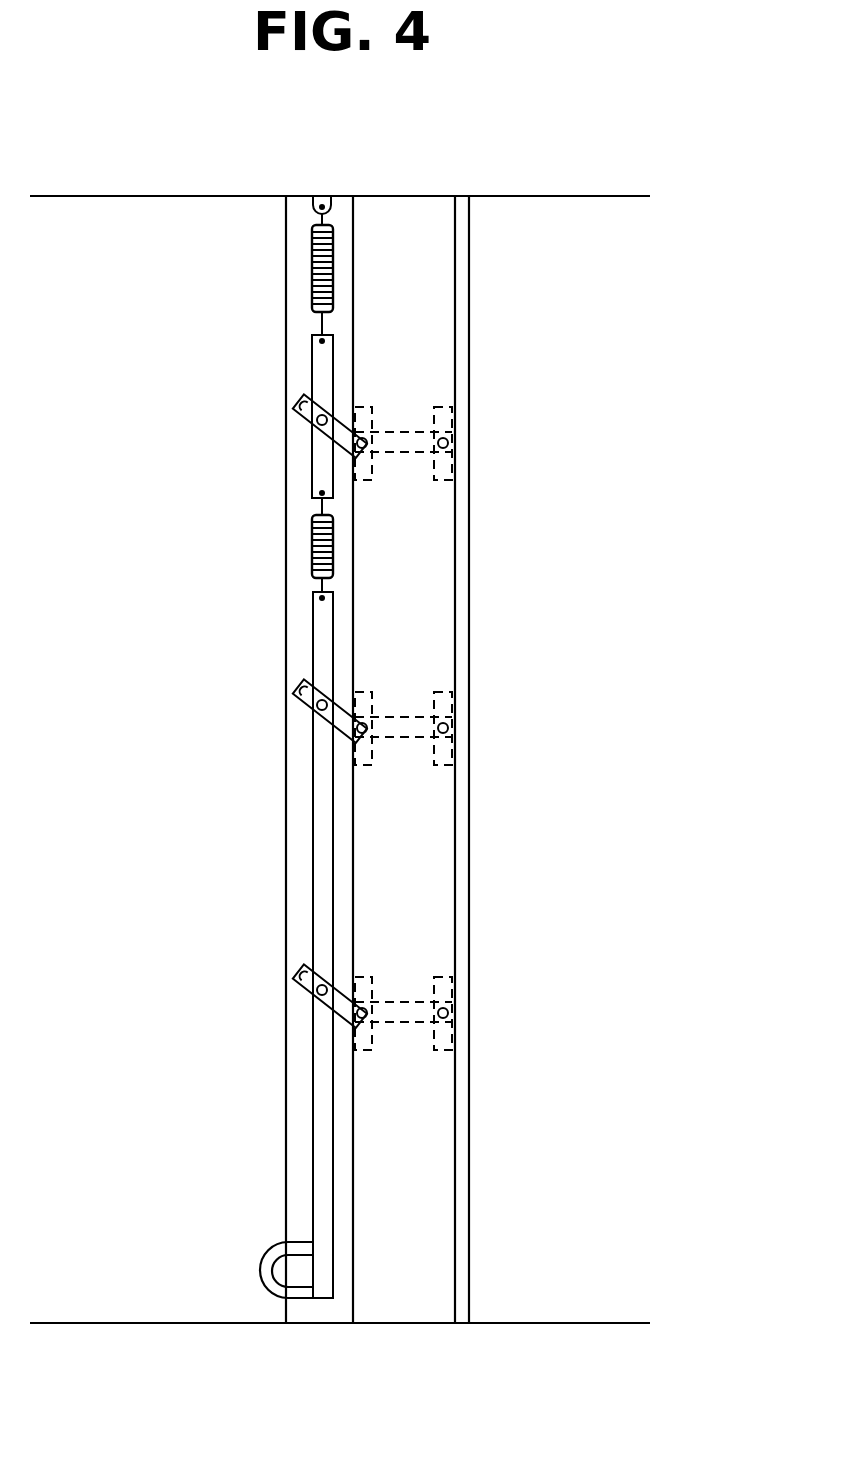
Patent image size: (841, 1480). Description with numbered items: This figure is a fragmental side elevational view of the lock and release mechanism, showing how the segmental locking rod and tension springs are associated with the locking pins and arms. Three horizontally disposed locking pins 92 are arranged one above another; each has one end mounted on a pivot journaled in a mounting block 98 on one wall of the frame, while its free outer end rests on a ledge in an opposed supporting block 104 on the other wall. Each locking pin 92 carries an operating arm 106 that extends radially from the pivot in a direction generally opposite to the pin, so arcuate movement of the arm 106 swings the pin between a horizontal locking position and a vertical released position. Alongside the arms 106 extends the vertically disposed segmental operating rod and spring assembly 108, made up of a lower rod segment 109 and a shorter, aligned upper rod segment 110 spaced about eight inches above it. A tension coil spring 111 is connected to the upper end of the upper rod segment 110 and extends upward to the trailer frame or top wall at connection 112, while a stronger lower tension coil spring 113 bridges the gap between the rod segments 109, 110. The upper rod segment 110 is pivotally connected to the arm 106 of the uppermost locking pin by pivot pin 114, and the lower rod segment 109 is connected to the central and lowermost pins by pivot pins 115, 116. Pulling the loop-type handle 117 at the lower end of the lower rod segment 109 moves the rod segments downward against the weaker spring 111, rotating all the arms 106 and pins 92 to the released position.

The locking pin 92 is at (398, 450).
The mounting block 98 is at (358, 1043).
The supporting block 104 is at (452, 983).
The operating arm 106 is at (303, 412).
The segmental operating rod and spring assembly 108 is at (300, 1166).
The lower rod segment 109 is at (323, 832).
The upper rod segment 110 is at (313, 355).
The tension coil spring 111 is at (323, 261).
The connection to upper portion of trailer side wall or frame 112 is at (317, 196).
The lower tension coil spring 113 is at (321, 548).
The pivot pin 114 is at (340, 402).
The pivot pin 115 is at (300, 718).
The pivot pin 116 is at (322, 985).
The loop-type handle 117 is at (262, 1269).